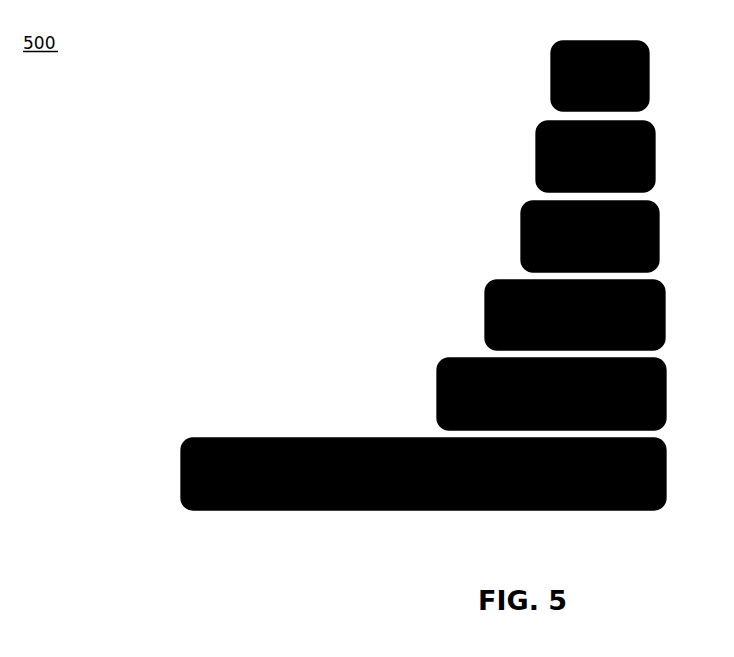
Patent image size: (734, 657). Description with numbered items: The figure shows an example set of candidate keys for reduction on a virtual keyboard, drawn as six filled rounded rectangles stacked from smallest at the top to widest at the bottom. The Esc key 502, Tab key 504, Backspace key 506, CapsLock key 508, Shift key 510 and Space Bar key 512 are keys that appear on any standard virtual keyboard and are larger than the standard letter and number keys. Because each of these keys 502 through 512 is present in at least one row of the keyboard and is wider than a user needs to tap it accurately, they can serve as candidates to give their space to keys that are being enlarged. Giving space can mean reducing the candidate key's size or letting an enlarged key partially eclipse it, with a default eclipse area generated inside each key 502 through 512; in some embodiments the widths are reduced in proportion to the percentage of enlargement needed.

The Esc key 502 is at (641, 60).
The Tab key 504 is at (647, 140).
The Backspace key 506 is at (651, 224).
The CapsLock key 508 is at (657, 303).
The Shift key 510 is at (658, 383).
The Space Bar key 512 is at (658, 464).